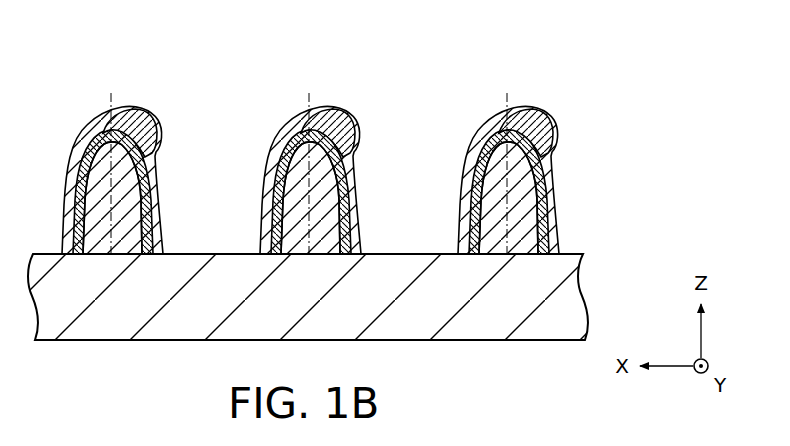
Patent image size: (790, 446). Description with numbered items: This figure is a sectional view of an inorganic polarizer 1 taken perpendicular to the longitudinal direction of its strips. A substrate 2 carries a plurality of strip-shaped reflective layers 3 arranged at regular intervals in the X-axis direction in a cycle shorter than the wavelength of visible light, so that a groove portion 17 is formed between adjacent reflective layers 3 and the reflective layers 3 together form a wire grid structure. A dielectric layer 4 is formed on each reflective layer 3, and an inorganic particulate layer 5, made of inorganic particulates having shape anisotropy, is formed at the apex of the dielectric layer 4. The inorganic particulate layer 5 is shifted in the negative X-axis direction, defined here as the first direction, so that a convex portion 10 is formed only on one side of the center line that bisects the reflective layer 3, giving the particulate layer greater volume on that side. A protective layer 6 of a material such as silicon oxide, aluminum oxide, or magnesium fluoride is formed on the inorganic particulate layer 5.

The inorganic polarizer 1 is at (605, 62).
The substrate 2 is at (575, 297).
The reflective layer 3 is at (130, 213).
The dielectric layer 4 is at (141, 185).
The inorganic particulate layer 5 is at (132, 110).
The protective layer 6 is at (153, 136).
The convex portion 10 is at (550, 110).
The groove portion 17 is at (209, 231).